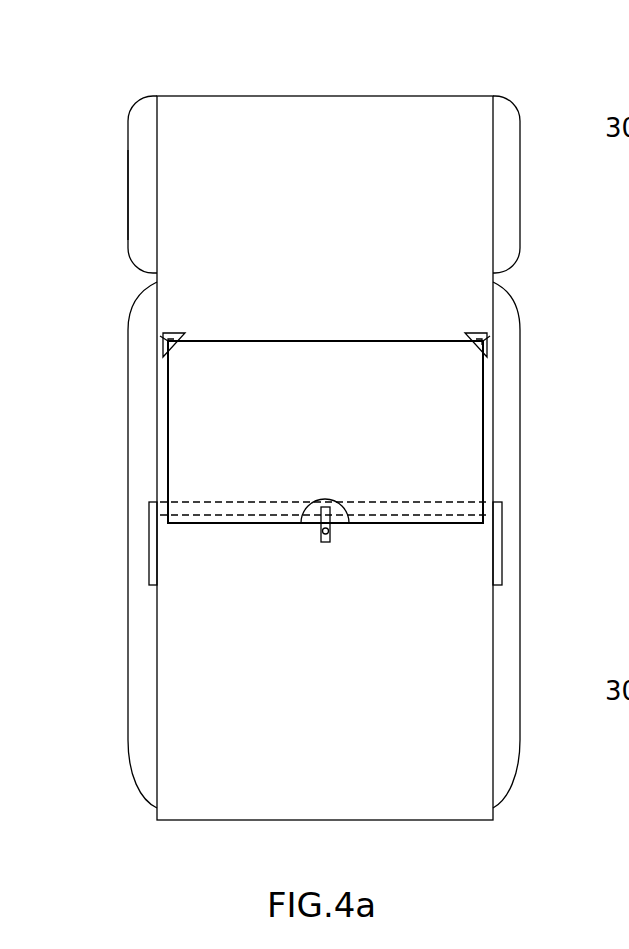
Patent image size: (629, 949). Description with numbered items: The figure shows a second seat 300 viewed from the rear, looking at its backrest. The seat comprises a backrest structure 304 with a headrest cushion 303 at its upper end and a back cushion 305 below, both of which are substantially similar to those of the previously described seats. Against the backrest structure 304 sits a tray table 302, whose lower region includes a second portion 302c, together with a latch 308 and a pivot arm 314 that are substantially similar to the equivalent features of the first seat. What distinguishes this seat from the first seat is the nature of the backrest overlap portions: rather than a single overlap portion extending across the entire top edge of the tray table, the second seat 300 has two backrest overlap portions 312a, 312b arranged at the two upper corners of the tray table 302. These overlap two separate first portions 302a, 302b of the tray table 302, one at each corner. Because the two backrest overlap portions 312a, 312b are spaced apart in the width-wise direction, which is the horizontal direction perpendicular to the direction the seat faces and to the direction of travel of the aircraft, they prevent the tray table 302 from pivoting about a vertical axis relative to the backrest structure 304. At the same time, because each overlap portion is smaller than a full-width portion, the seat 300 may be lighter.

The second seat 300 is at (240, 89).
The tray table 302 is at (445, 397).
The first portion of the tray table 302a is at (478, 333).
The first portion of the tray table 302b is at (163, 345).
The second portion of the tray table 302c is at (348, 512).
The headrest cushion 303 is at (148, 192).
The backrest structure 304 is at (466, 122).
The back cushion 305 is at (143, 425).
The latch 308 is at (320, 533).
The backrest overlap portion 312a is at (480, 348).
The backrest overlap portion 312b is at (165, 336).
The pivot arm 314 is at (150, 532).